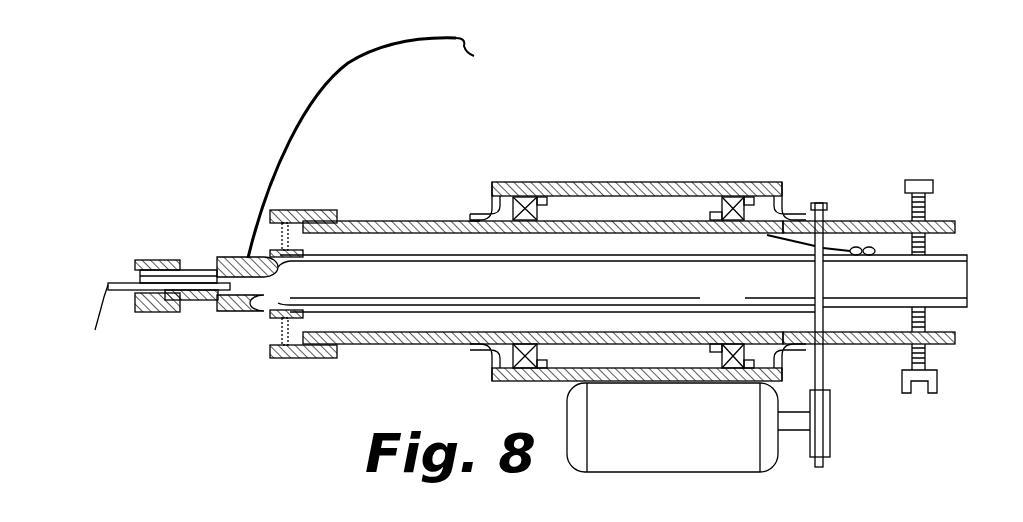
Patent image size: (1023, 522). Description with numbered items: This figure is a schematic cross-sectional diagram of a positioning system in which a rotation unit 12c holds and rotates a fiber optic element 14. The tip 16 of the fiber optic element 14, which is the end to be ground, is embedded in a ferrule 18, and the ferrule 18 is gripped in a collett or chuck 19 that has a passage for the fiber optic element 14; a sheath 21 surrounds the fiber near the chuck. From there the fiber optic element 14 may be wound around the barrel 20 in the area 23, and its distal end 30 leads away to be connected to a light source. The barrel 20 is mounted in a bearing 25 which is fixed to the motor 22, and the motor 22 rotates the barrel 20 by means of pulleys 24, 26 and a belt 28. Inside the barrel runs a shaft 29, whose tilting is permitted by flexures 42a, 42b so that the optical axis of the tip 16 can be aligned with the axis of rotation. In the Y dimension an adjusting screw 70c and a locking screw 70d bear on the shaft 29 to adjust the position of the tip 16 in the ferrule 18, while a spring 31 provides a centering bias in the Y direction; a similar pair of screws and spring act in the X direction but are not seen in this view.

The rotation unit 12c is at (703, 84).
The fiber optic element 14 is at (378, 53).
The tip 16 is at (93, 321).
The ferrule 18 is at (120, 282).
The collett or chuck 19 is at (158, 259).
The barrel 20 is at (863, 219).
The sheath 21 is at (202, 265).
The motor 22 is at (630, 472).
The area 23 is at (390, 220).
The pulley 24 is at (830, 446).
The bearing 25 is at (628, 181).
The pulley 26 is at (808, 208).
The belt 28 is at (826, 288).
The shaft 29 is at (960, 253).
The distal end 30 is at (479, 54).
The spring 31 is at (793, 236).
The flexure 42a is at (283, 237).
The flexure 42b is at (277, 327).
The adjusting screw 70c is at (935, 393).
The locking screw 70d is at (923, 178).